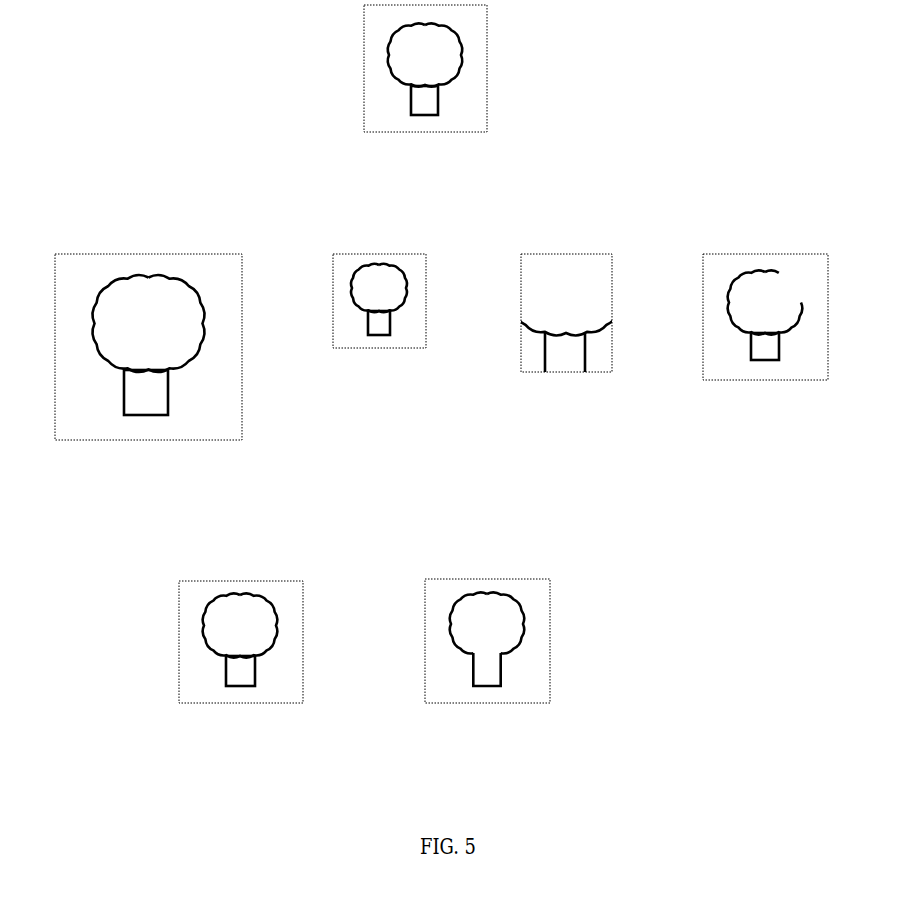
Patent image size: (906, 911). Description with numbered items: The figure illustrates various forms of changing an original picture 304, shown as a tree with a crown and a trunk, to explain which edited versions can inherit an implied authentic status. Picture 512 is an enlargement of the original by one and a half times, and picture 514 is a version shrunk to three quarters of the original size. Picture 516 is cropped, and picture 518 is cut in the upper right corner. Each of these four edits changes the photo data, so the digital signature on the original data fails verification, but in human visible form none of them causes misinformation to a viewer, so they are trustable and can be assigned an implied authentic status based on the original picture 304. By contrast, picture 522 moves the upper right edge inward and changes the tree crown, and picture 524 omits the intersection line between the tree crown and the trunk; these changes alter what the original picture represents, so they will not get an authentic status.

The picture 304 is at (426, 112).
The picture 512 is at (149, 392).
The picture 514 is at (379, 340).
The picture 516 is at (566, 342).
The picture 518 is at (765, 359).
The picture 522 is at (240, 682).
The picture 524 is at (488, 682).